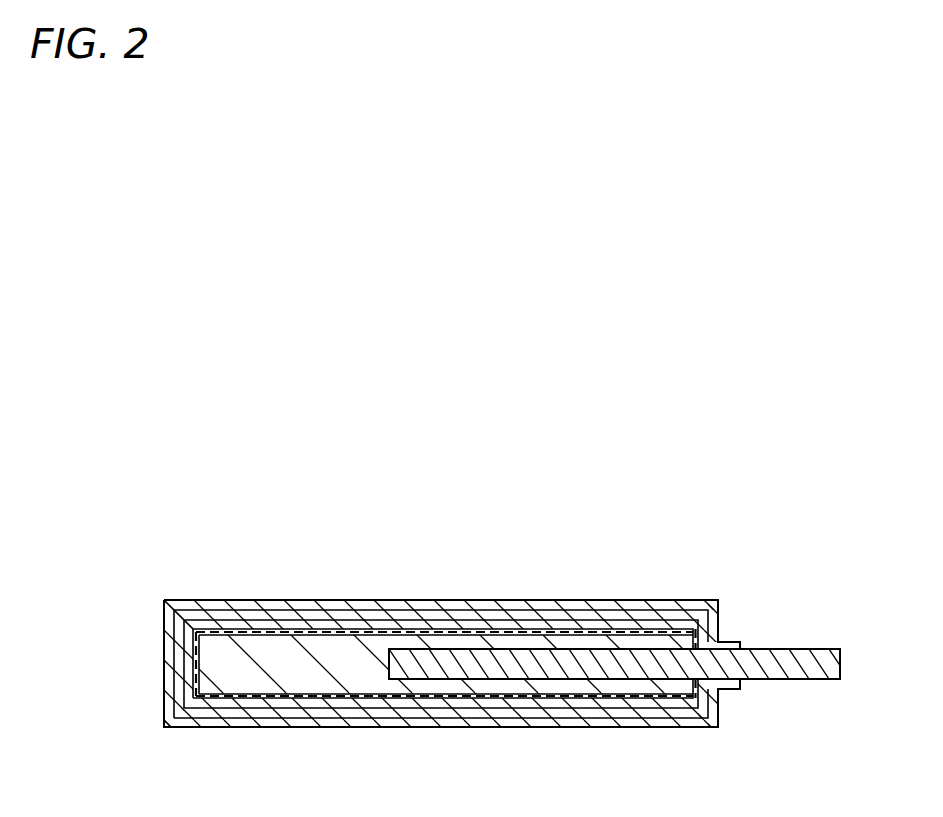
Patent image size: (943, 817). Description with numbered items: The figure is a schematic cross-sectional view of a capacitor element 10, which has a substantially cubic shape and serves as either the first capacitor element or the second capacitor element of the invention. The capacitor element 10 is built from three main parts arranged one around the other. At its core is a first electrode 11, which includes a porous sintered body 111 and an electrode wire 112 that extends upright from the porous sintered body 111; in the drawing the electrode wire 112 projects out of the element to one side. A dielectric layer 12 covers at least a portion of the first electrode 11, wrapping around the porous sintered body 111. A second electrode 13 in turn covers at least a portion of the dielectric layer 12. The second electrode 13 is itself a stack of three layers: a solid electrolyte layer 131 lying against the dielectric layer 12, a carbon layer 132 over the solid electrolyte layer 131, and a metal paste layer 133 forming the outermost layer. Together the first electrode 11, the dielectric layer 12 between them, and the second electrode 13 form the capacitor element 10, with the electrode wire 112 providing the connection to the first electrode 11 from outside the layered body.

The capacitor element 10 is at (569, 415).
The first electrode 11 is at (705, 526).
The porous sintered body 111 is at (611, 643).
The electrode wire 112 is at (662, 663).
The dielectric layer 12 is at (435, 636).
The second electrode 13 is at (350, 524).
The solid electrolyte layer 131 is at (302, 623).
The carbon layer 132 is at (268, 613).
The metal paste layer 133 is at (195, 605).